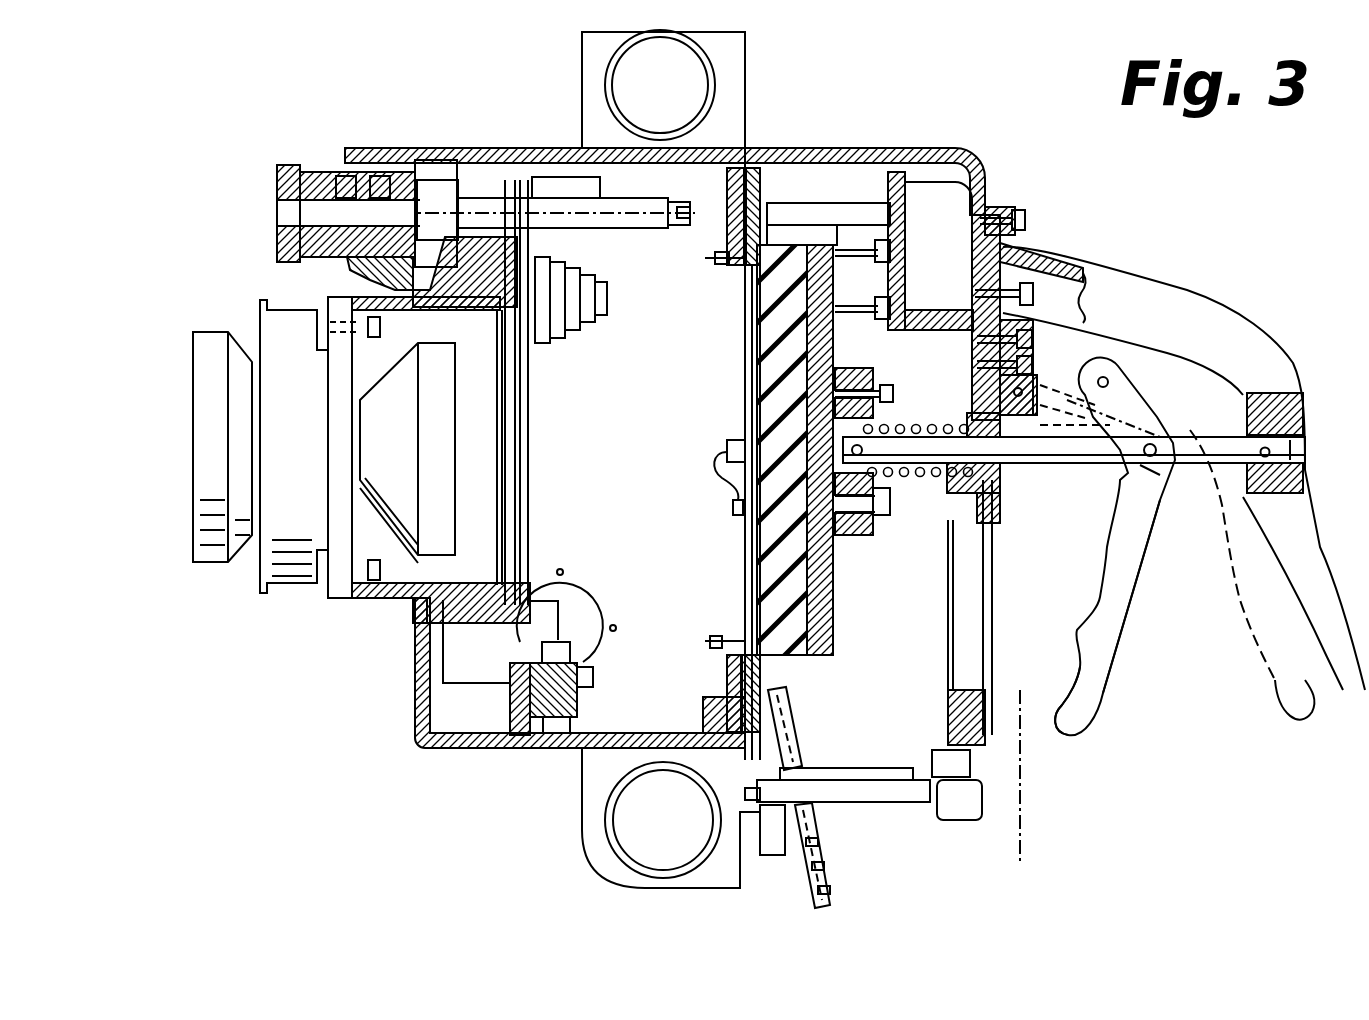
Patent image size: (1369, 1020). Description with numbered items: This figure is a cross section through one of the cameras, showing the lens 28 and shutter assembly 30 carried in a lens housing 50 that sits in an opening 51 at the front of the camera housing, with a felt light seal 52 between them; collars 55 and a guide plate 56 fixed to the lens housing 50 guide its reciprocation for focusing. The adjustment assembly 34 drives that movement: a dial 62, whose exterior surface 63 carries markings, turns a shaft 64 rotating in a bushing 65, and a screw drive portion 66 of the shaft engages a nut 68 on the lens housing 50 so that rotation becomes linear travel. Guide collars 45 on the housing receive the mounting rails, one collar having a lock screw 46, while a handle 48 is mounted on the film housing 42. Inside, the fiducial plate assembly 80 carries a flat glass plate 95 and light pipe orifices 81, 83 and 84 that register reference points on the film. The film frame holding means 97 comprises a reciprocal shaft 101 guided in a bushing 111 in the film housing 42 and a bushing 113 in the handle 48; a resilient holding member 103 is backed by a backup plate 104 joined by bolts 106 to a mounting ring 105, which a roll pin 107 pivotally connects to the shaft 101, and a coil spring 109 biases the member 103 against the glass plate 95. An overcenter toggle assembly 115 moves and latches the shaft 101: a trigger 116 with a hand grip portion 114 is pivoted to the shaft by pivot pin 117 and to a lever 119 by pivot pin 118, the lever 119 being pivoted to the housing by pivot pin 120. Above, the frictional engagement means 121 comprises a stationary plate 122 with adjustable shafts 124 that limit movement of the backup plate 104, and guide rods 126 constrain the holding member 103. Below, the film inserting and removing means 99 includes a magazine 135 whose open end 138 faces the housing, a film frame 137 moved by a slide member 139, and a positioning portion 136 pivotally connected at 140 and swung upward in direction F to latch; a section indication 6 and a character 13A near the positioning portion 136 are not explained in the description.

The lens 28 is at (208, 332).
The shutter assembly 30 is at (260, 590).
The adjustment assembly 34 is at (268, 146).
The film housing portion 42 is at (862, 142).
The guide collars 45 is at (735, 55).
The lock screw 46 is at (780, 858).
The handle 48 is at (1183, 290).
The lens housing 50 is at (328, 600).
The opening 51 is at (405, 603).
The light seal 52 is at (430, 612).
The collars 55 is at (470, 180).
The guide plate 56 is at (470, 685).
The dial 62 is at (270, 194).
The exterior surface 63 is at (352, 168).
The shaft 64 is at (277, 228).
The bushing 65 is at (382, 160).
The screw drive portion 66 is at (640, 206).
The nut 68 is at (600, 262).
The plate assembly 80 is at (742, 170).
The light pipe orifice 81 is at (715, 262).
The light pipe orifice 83 is at (718, 641).
The light pipe orifice 84 is at (727, 448).
The glass plate 95 is at (772, 245).
The film frame holding means 97 is at (845, 543).
The film inserting and removing means 99 is at (835, 824).
The reciprocal shaft 101 is at (1044, 482).
The holding member 103 is at (822, 222).
The backup plate 104 is at (838, 352).
The mounting ring 105 is at (872, 418).
The bolts 106 is at (878, 390).
The roll pin 107 is at (880, 450).
The coil spring 109 is at (896, 488).
The bushing 111 is at (1010, 478).
The bushing 113 is at (1245, 430).
The hand grip portion 114 is at (1112, 716).
The overcenter toggle assembly 115 is at (1150, 396).
The trigger 116 is at (1118, 626).
The pivot pin 117 is at (1132, 498).
The pivot pin 118 is at (1108, 378).
The lever 119 is at (1062, 390).
The pivot pin 120 is at (1016, 427).
The frictional engagement means 121 is at (915, 225).
The stationary plate 122 is at (930, 165).
The adjustable shafts 124 is at (850, 250).
The guide rods 126 is at (852, 312).
The magazine portion 135 is at (820, 849).
The positioning portion 136 is at (843, 791).
The film frame 137 is at (826, 872).
The open end 138 is at (800, 694).
The slide member 139 is at (830, 894).
The pivotal connection 140 is at (745, 793).
The plate 13A is at (846, 759).
The section line 6- 6 is at (1005, 822).
The pivoting direction F is at (928, 874).